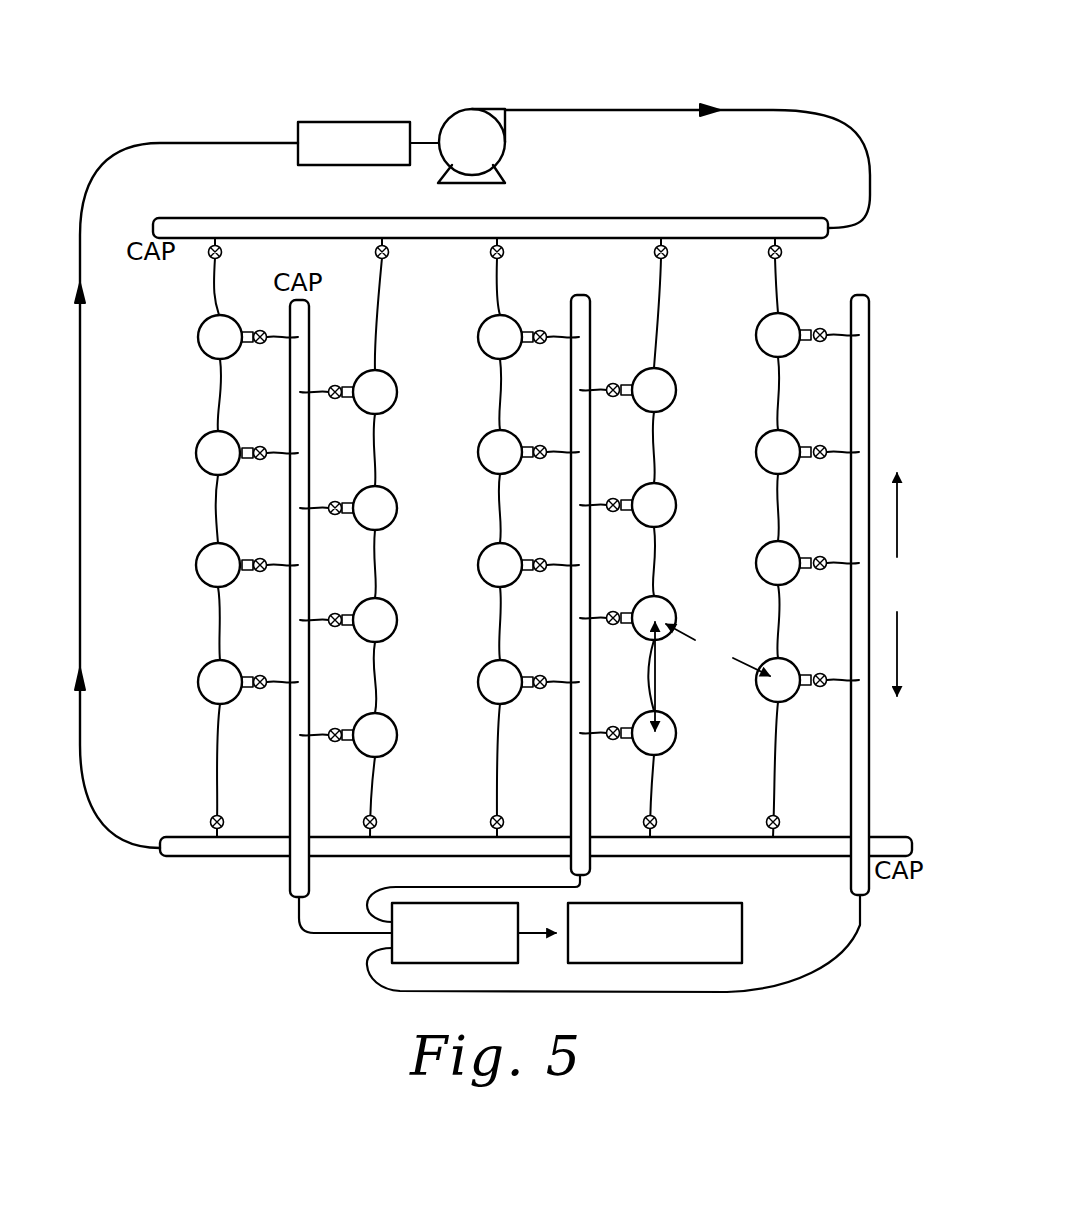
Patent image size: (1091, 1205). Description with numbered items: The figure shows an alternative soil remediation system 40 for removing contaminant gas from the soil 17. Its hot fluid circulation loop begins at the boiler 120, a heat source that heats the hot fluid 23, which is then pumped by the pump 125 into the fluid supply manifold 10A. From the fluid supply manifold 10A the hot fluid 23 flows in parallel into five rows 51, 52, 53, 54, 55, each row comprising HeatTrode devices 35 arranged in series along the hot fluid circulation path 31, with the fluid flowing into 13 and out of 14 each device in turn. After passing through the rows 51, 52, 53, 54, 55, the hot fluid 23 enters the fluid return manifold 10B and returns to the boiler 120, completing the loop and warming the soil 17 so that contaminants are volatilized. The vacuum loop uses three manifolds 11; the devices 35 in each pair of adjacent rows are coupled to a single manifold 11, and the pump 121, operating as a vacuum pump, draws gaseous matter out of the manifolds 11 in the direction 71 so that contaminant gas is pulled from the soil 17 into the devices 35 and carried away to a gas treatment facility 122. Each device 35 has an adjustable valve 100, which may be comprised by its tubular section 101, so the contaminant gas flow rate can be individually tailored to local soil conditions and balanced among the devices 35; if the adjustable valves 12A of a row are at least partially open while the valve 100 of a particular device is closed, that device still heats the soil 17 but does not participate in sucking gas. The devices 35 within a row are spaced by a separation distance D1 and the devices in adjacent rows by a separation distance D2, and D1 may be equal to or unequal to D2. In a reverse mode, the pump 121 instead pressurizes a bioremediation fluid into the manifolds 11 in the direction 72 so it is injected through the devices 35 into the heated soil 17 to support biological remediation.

The fluid supply manifold 10A is at (688, 222).
The fluid return manifold 10B is at (630, 852).
The manifold 11 is at (310, 365).
The adjustable valve 12A is at (222, 252).
The flow into tubular member 13 is at (228, 433).
The flow out of tubular member 14 is at (218, 478).
The soil 17 is at (447, 532).
The hot fluid 23 is at (103, 165).
The hot fluid circulation path 31 is at (213, 285).
The HeatTrode device 35 is at (196, 316).
The soil remediation system 40 is at (596, 83).
The first row of devices 51 is at (217, 206).
The second row of devices 52 is at (377, 206).
The third row of devices 53 is at (518, 207).
The fourth row of devices 54 is at (659, 206).
The fifth row of devices 55 is at (777, 206).
The direction of gaseous matter flow 71 is at (900, 660).
The direction of bioremediation fluid flow 72 is at (900, 507).
The adjustable valve 100 is at (265, 447).
The tubular section 101 is at (248, 548).
The boiler 120 is at (332, 120).
The pump 121 is at (372, 971).
The gas treatment facility 122 is at (745, 926).
The pump 125 is at (473, 108).
The separation distance within a row D1 is at (660, 676).
The separation distance between adjacent rows D2 is at (718, 650).